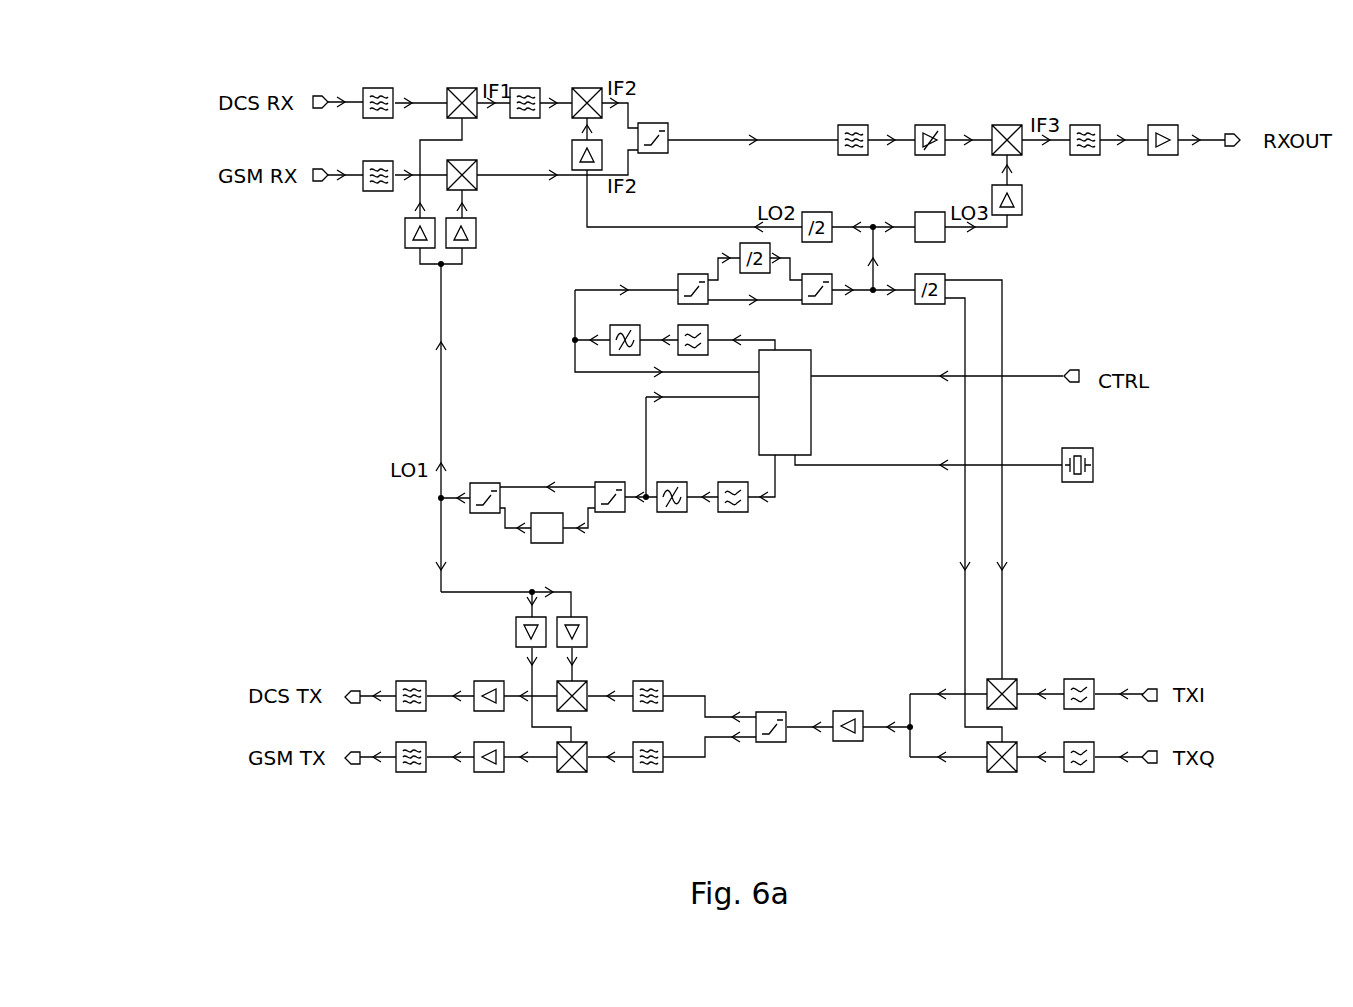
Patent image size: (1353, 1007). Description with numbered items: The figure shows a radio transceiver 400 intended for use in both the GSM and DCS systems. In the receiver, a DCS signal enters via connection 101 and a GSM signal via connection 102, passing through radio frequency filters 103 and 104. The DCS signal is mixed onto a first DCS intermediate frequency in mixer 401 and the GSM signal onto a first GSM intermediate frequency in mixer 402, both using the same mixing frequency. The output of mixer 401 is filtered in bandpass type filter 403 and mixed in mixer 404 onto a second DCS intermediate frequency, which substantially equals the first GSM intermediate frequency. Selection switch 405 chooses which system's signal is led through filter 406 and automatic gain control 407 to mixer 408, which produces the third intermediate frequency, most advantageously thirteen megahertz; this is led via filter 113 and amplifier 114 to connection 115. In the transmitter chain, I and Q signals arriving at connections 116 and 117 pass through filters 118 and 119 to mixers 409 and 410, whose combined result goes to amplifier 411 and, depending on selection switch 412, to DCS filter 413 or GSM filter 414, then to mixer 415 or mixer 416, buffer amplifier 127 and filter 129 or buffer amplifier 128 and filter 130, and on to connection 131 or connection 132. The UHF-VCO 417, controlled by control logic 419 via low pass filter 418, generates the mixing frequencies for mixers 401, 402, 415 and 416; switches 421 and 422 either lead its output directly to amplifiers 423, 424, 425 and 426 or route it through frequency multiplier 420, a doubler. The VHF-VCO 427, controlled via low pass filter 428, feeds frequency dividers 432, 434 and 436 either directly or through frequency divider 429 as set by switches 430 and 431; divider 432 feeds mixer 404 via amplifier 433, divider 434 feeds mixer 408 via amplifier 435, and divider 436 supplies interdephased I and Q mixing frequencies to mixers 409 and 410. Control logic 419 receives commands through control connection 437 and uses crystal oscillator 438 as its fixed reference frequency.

The radio transceiver 400 is at (372, 413).
The connection 101 is at (317, 97).
The connection 102 is at (317, 181).
The radio frequency filter 103 is at (380, 88).
The radio frequency filter 104 is at (375, 191).
The mixer 401 is at (462, 88).
The mixer 402 is at (477, 180).
The bandpass type filter 403 is at (520, 88).
The mixer 404 is at (580, 88).
The selection switch 405 is at (660, 123).
The filter 406 is at (860, 125).
The automatic gain control 407 is at (940, 125).
The mixer 408 is at (1010, 125).
The filter 113 is at (1090, 125).
The amplifier 114 is at (1170, 125).
The connection 115 is at (1240, 134).
The amplifier 433 is at (572, 148).
The amplifier 435 is at (1022, 188).
The frequency divider 434 is at (945, 240).
The frequency divider 432 is at (812, 212).
The frequency divider 429 is at (745, 243).
The switch 430 is at (680, 274).
The switch 431 is at (820, 304).
The frequency divider 436 is at (930, 304).
The VHF-VCO 427 is at (620, 325).
The low pass filter 428 is at (685, 325).
The control logic 419 is at (811, 423).
The control connection 437 is at (1072, 370).
The crystal oscillator 438 is at (1093, 468).
The switch 421 is at (610, 482).
The UHF-VCO 417 is at (675, 482).
The low pass filter 418 is at (730, 482).
The switch 422 is at (487, 483).
The frequency multiplier 420 is at (553, 543).
The amplifier 423 is at (405, 235).
The amplifier 424 is at (476, 235).
The amplifier 425 is at (572, 617).
The amplifier 426 is at (516, 620).
The mixer 415 is at (588, 683).
The mixer 416 is at (588, 772).
The DCS filter 413 is at (650, 681).
The GSM filter 414 is at (650, 772).
The buffer amplifier 127 is at (497, 681).
The buffer amplifier 128 is at (495, 772).
The filter 129 is at (420, 681).
The filter 130 is at (418, 772).
The connection 131 is at (346, 692).
The connection 132 is at (350, 764).
The selection switch 412 is at (772, 742).
The amplifier 411 is at (848, 742).
The mixer 409 is at (1008, 679).
The mixer 410 is at (1002, 772).
The filter 118 is at (1080, 679).
The filter 119 is at (1080, 772).
The connection 116 is at (1148, 689).
The connection 117 is at (1148, 764).